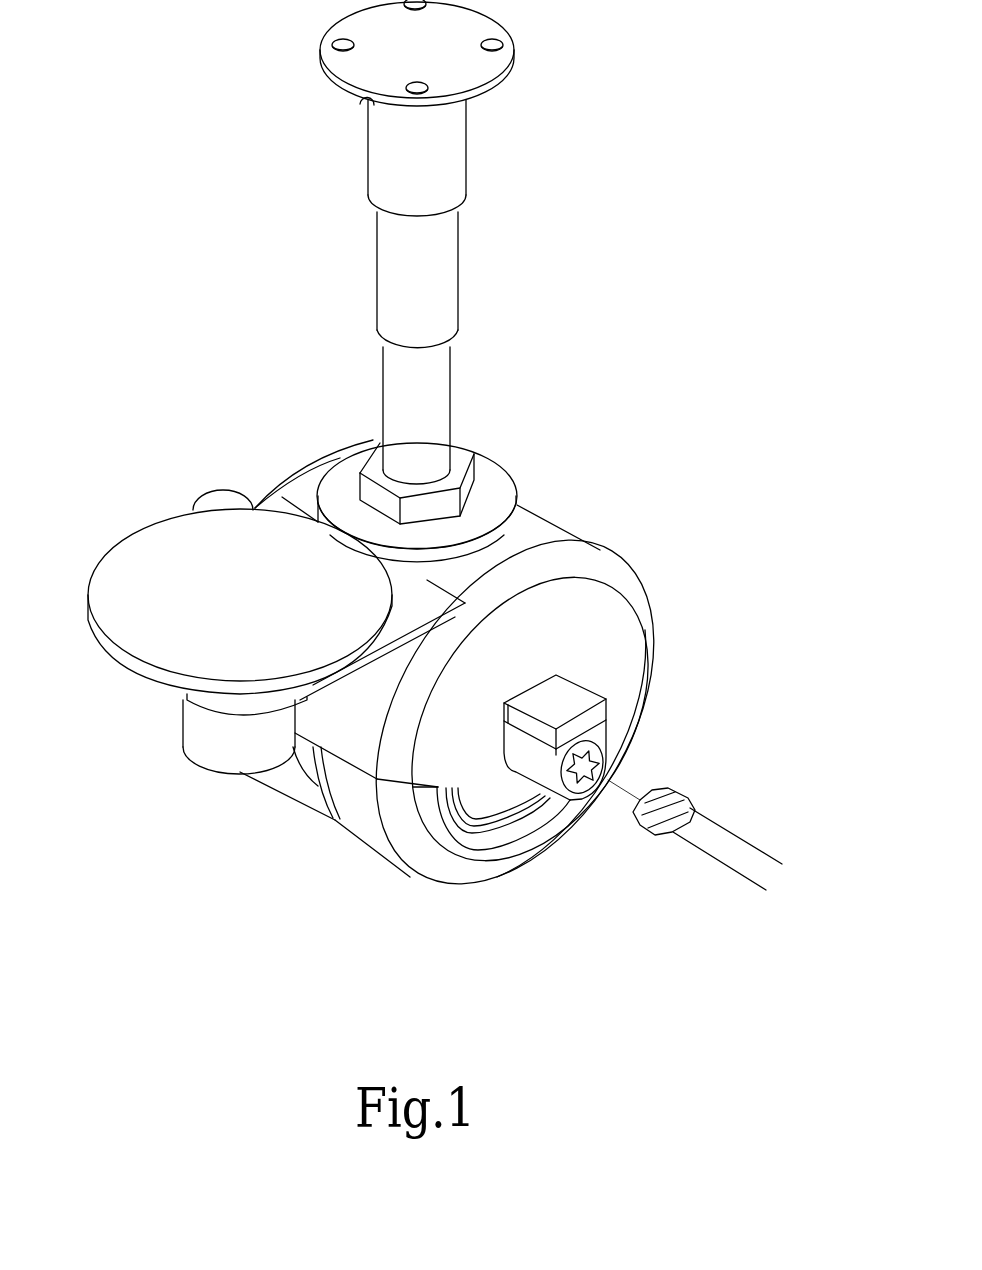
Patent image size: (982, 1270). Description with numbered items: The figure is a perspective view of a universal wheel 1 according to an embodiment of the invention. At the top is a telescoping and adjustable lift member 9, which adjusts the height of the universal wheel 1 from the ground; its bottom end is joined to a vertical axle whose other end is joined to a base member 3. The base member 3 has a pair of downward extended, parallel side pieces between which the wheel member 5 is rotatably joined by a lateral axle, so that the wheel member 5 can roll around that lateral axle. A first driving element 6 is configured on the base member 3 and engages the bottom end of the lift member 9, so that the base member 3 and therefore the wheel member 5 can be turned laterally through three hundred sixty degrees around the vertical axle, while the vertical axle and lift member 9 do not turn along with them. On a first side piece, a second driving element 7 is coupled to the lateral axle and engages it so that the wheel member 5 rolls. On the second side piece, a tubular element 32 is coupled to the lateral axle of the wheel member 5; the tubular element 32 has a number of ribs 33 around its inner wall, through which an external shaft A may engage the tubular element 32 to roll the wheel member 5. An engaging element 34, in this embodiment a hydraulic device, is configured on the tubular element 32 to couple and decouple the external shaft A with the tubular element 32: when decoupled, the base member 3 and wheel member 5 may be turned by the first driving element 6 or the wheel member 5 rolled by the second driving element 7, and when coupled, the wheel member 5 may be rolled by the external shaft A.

The universal wheel 1 is at (640, 390).
The base member 3 is at (565, 540).
The wheel member 5 is at (371, 845).
The first driving element 6 is at (213, 755).
The second driving element 7 is at (223, 495).
The lift member 9 is at (451, 158).
The tubular element 32 is at (605, 737).
The ribs 33 is at (578, 785).
The engaging element 34 is at (570, 697).
The external shaft A is at (740, 835).